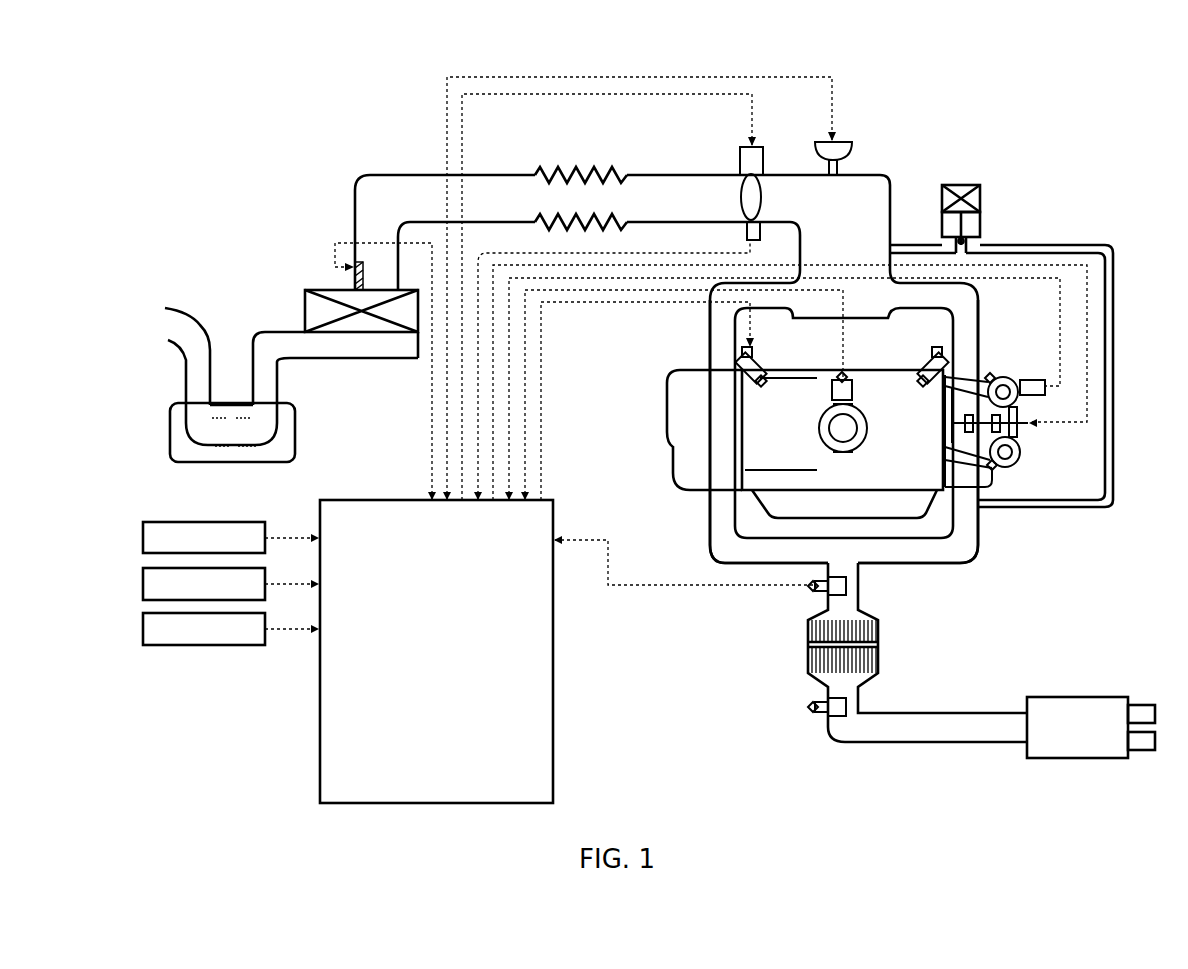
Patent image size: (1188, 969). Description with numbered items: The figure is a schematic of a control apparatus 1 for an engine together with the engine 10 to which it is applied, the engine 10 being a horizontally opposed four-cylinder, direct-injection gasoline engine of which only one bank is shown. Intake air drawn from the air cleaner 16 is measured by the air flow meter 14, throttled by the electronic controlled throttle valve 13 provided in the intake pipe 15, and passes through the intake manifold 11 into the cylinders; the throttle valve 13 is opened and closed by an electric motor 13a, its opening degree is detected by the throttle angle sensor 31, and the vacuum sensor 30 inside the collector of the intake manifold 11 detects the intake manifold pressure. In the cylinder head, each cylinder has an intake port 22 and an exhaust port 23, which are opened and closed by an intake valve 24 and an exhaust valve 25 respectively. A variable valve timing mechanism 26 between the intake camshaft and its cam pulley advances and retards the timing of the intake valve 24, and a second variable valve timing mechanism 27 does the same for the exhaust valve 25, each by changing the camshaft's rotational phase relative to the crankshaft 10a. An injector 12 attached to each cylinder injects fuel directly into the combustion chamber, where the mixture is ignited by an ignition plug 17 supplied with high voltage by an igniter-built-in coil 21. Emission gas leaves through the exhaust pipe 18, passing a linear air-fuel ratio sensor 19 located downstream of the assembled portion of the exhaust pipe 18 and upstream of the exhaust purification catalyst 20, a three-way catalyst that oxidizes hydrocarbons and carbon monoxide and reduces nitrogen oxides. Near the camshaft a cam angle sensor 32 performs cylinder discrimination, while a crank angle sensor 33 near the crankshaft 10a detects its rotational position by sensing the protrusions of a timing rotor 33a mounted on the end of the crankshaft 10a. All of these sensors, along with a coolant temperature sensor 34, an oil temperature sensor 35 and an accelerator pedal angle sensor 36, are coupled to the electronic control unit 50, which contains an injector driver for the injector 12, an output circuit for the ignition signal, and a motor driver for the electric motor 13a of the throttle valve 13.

The control apparatus 1 is at (596, 438).
The engine 10 is at (857, 482).
The crankshaft 10a is at (826, 433).
The intake manifold 11 is at (710, 340).
The injector 12 is at (758, 362).
The electronic controlled throttle valve 13 is at (745, 193).
The electric motor 13a is at (742, 152).
The air flow meter 14 is at (340, 268).
The intake pipe 15 is at (640, 175).
The air cleaner 16 is at (305, 305).
The ignition plug 17 is at (946, 440).
The exhaust pipe 18 is at (710, 530).
The air-fuel ratio sensor 19 is at (815, 590).
The exhaust purification catalyst 20 is at (880, 655).
The igniter-built-in coil 21 is at (1025, 435).
The intake port 22 is at (945, 390).
The exhaust port 23 is at (1000, 470).
The intake valve 24 is at (950, 423).
The exhaust valve 25 is at (945, 470).
The variable valve timing mechanism 26 is at (1000, 377).
The variable valve timing mechanism 27 is at (1020, 455).
The vacuum sensor 30 is at (853, 150).
The throttle angle sensor 31 is at (746, 232).
The cam angle sensor 32 is at (1033, 380).
The crank angle sensor 33 is at (832, 388).
The timing rotor 33a is at (818, 428).
The coolant temperature sensor 34 is at (143, 538).
The oil temperature sensor 35 is at (143, 583).
The accelerator pedal angle sensor 36 is at (143, 628).
The electronic control unit 50 is at (553, 655).